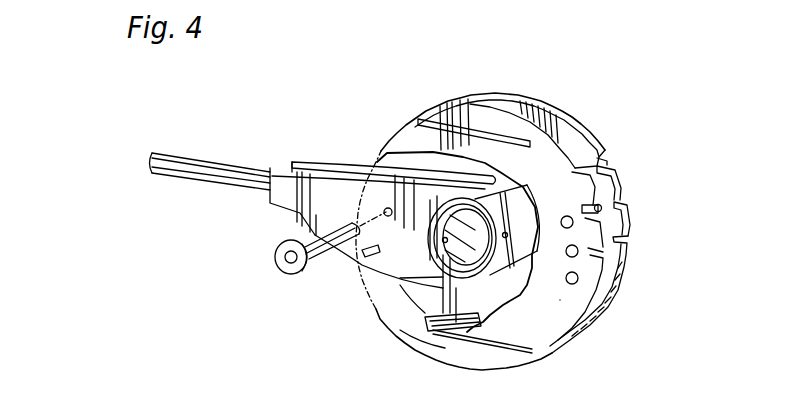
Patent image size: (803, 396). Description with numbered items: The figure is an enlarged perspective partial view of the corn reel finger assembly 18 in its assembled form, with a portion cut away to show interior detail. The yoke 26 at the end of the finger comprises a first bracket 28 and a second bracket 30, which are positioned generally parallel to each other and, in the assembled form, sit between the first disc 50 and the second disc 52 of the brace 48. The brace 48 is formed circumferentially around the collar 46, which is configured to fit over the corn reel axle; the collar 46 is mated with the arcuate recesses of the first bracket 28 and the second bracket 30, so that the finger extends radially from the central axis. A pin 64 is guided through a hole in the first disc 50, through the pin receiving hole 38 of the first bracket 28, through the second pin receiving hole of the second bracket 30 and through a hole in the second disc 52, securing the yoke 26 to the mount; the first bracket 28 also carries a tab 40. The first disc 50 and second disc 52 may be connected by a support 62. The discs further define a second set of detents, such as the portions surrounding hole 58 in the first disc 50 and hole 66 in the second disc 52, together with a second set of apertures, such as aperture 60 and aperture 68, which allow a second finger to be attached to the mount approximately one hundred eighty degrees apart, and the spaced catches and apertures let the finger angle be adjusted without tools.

The corn reel finger assembly 18 is at (639, 138).
The yoke member 26 is at (304, 225).
The first bracket 28 is at (270, 202).
The second bracket 30 is at (293, 162).
The pin receiving hole 38 is at (385, 209).
The tab 40 is at (365, 261).
The collar 46 is at (500, 272).
The brace 48 is at (615, 310).
The first disc 50 is at (565, 313).
The second disc 52 is at (578, 143).
The hole 58 is at (567, 216).
The aperture 60 is at (572, 167).
The support 62 is at (553, 127).
The pin 64 is at (287, 270).
The hole 66 is at (623, 197).
The aperture 68 is at (603, 167).